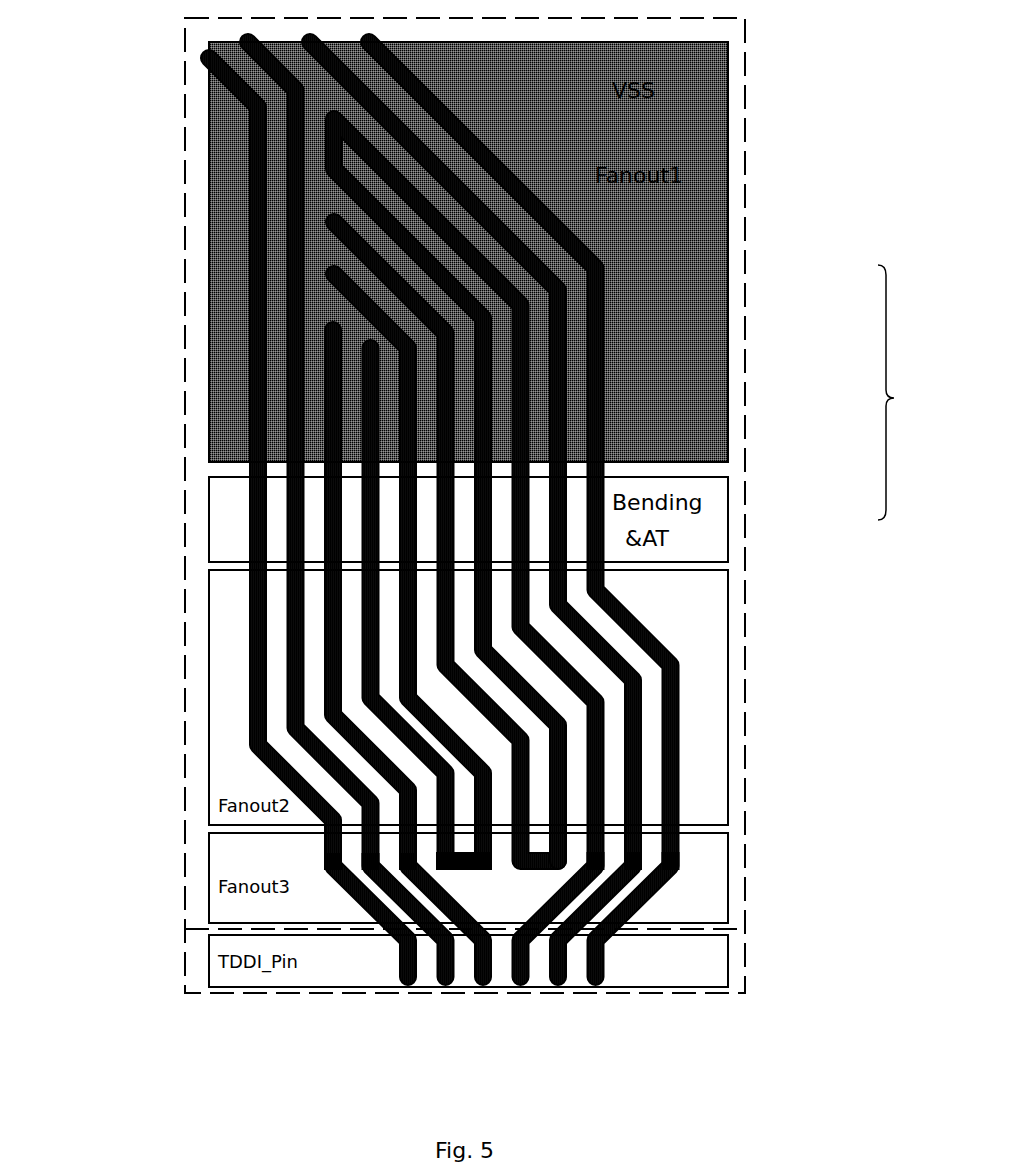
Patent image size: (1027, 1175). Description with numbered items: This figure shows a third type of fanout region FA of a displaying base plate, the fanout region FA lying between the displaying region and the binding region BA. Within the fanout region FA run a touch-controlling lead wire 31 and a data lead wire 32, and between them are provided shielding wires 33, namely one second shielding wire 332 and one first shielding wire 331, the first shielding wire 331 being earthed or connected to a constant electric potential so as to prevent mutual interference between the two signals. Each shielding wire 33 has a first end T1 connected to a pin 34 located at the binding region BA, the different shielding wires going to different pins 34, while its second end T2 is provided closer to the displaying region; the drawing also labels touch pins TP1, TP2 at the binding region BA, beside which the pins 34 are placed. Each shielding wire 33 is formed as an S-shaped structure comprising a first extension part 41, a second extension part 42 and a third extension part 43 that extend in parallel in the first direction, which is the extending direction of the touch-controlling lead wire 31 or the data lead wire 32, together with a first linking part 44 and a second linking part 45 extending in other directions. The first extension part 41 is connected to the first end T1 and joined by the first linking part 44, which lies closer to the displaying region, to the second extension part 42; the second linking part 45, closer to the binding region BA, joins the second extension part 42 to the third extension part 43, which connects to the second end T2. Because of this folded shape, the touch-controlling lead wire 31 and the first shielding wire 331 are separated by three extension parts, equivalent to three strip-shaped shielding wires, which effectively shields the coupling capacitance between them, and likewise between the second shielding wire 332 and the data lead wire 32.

The touch-controlling lead wire 31 is at (258, 715).
The data lead wire 32 is at (667, 745).
The shielding wire 33 is at (909, 392).
The first shielding wire 331 is at (570, 737).
The second shielding wire 332 is at (375, 665).
The pin 34 is at (522, 963).
The first extension part 41 is at (345, 620).
The second extension part 42 is at (375, 592).
The third extension part 43 is at (415, 527).
The first linking part 44 is at (380, 358).
The second linking part 45 is at (480, 873).
The first end of the shielding wire T1 is at (525, 945).
The second end of the shielding wire T2 is at (325, 272).
The first touch pin TP1 is at (333, 868).
The second touch pin TP2 is at (370, 868).
The fanout region FA is at (728, 868).
The binding region BA is at (728, 963).